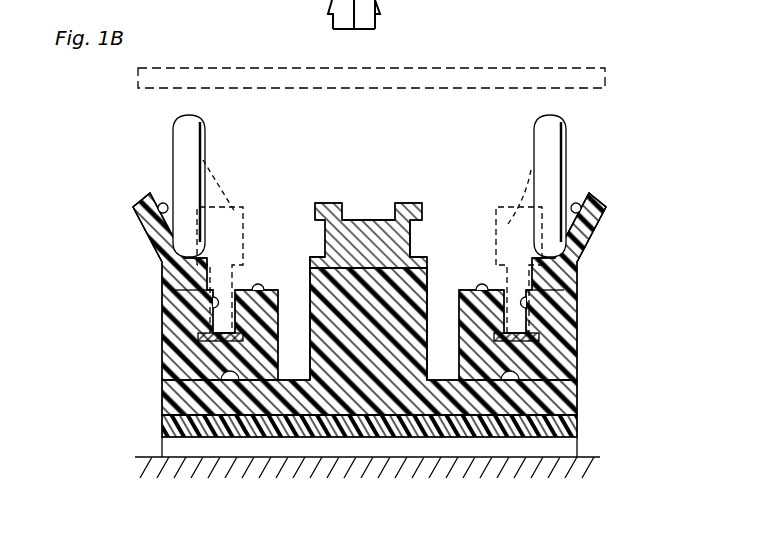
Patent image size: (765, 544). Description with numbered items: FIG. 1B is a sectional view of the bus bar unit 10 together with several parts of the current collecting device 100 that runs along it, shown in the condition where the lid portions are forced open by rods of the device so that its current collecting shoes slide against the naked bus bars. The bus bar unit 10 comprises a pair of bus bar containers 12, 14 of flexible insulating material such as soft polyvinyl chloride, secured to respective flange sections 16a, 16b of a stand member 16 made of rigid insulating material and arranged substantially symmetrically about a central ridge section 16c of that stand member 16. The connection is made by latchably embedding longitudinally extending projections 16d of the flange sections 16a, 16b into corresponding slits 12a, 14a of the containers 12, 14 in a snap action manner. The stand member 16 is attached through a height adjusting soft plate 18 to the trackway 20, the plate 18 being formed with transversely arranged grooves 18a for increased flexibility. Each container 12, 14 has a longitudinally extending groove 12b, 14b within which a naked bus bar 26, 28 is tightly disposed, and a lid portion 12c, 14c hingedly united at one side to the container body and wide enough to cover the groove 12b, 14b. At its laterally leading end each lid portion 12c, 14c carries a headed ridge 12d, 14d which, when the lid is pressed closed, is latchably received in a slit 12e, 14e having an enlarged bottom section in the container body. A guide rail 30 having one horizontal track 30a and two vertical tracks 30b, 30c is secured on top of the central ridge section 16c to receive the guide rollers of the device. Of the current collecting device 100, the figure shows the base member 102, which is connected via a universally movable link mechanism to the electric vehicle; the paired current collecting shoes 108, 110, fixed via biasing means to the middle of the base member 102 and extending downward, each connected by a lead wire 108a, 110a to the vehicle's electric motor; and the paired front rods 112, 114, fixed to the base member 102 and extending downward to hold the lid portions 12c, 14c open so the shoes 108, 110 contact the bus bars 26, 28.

The bus bar unit 10 is at (365, 323).
The bus bar container 12 is at (170, 326).
The slit 12a is at (222, 378).
The groove 12b is at (212, 301).
The lid portion 12c is at (152, 238).
The headed ridge 12d is at (163, 203).
The slit 12e is at (276, 290).
The bus bar container 14 is at (550, 342).
The slit 14a is at (550, 376).
The groove 14b is at (580, 305).
The lid portion 14c is at (590, 238).
The headed ridge 14d is at (578, 206).
The slit 14e is at (478, 299).
The stand member 16 is at (414, 388).
The flange section 16a is at (170, 400).
The flange section 16b is at (560, 398).
The central ridge section 16c is at (418, 330).
The projection 16d is at (176, 350).
The height adjusting soft plate 18 is at (578, 427).
The grooves 18a is at (578, 447).
The trackway 20 is at (367, 477).
The naked bus bar 26 is at (205, 334).
The naked bus bar 28 is at (540, 337).
The guide rail 30 is at (400, 205).
The horizontal track 30a is at (368, 220).
The vertical track 30b is at (320, 257).
The vertical track 30c is at (418, 237).
The current collecting device 100 is at (603, 112).
The base member 102 is at (586, 68).
The current collecting shoe 108 is at (238, 235).
The lead wire 108a is at (206, 206).
The current collecting shoe 110 is at (510, 226).
The lead wire 110a is at (531, 170).
The front rod 112 is at (205, 133).
The front rod 114 is at (566, 160).